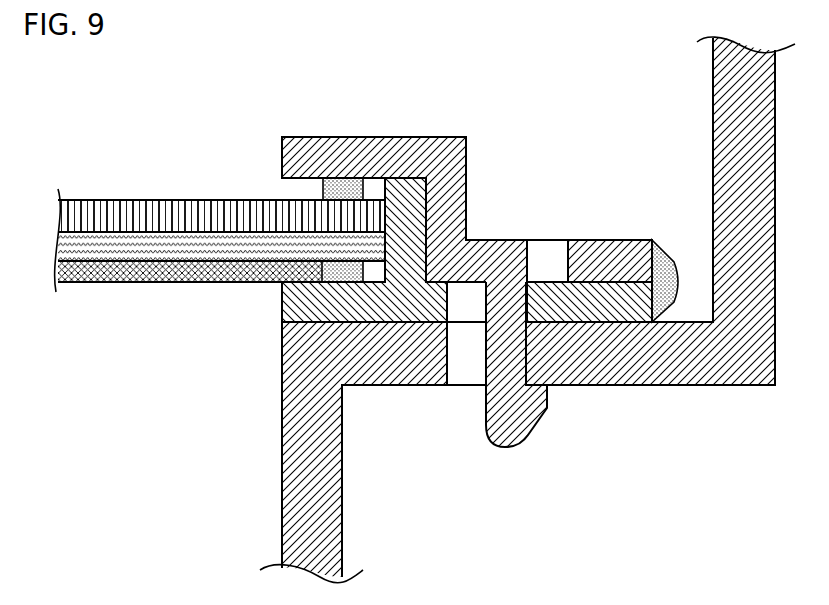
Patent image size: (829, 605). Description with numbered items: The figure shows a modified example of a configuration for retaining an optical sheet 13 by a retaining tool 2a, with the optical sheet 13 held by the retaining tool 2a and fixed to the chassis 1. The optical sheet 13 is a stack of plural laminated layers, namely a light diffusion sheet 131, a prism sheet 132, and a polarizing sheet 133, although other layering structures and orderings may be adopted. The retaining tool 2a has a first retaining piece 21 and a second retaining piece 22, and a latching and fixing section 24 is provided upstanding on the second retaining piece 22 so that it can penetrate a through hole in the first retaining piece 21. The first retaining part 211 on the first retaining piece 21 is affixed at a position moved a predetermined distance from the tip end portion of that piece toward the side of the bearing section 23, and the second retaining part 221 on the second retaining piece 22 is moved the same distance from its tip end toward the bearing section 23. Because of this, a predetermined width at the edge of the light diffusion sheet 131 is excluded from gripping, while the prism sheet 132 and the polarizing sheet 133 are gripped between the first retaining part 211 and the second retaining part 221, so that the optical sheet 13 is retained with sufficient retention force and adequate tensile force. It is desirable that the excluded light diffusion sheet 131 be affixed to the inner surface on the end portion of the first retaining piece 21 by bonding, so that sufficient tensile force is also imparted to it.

The chassis 1 is at (340, 490).
The optical sheet 13 is at (211, 210).
The light diffusion sheet 131 is at (157, 278).
The prism sheet 132 is at (103, 258).
The polarizing sheet 133 is at (172, 200).
The retaining tool 2a is at (454, 270).
The first retaining piece 21 is at (288, 304).
The first retaining part 211 is at (345, 280).
The second retaining piece 22 is at (427, 140).
The second retaining part 221 is at (323, 191).
The bearing section 23 is at (668, 263).
The latching and fixing section 24 is at (525, 440).